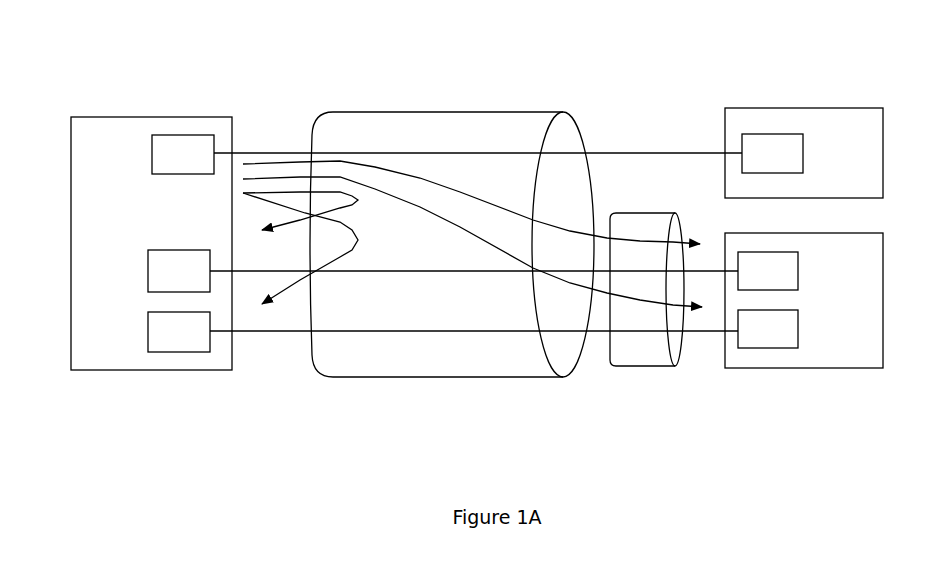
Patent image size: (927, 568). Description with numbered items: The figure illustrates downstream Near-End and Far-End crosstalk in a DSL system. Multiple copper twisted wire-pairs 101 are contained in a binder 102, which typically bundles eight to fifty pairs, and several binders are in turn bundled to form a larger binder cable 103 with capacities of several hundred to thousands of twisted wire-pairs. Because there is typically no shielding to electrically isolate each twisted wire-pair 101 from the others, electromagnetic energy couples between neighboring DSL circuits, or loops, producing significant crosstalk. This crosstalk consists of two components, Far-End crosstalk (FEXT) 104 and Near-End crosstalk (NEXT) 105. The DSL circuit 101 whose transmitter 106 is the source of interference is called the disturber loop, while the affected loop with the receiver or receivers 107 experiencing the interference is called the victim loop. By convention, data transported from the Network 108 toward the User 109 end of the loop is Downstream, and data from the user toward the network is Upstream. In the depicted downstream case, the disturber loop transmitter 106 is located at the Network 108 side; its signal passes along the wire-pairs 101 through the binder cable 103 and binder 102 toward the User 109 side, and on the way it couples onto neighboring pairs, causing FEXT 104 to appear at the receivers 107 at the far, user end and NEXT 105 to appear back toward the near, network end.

The copper twisted wire-pair 101 is at (259, 143).
The binder 102 is at (642, 372).
The binder cable 103 is at (535, 98).
The Far-End crosstalk (FEXT) 104 is at (690, 310).
The Near-End crosstalk (NEXT) 105 is at (283, 312).
The transmitter 106 is at (183, 132).
The receiver 107 is at (176, 354).
The Network 108 is at (138, 105).
The User 109 is at (750, 96).